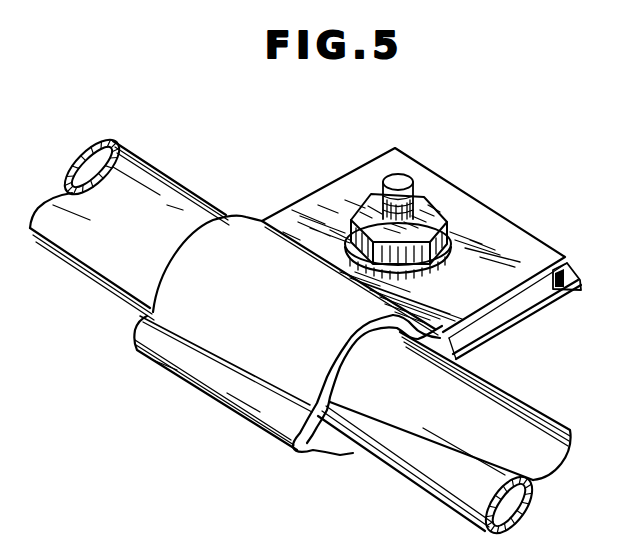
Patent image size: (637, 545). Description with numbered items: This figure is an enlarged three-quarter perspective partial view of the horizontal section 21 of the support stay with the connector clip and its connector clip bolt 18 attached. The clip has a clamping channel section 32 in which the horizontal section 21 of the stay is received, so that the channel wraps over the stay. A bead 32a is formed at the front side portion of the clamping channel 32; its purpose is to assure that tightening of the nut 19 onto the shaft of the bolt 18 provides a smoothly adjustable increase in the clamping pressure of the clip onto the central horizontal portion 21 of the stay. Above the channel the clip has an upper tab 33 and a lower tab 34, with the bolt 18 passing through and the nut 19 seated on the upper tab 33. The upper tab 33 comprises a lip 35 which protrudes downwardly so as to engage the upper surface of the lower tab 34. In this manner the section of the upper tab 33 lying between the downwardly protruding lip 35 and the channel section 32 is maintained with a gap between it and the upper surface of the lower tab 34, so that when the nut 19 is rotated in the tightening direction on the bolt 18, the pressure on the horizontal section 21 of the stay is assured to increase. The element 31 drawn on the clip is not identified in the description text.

The bolt 18 is at (400, 177).
The nut 19 is at (428, 213).
The horizontal section 21 is at (397, 442).
The strap hook 31 is at (394, 330).
The channel section 32 is at (205, 273).
The bead 32a is at (213, 377).
The upper tab 33 is at (507, 238).
The lower tab 34 is at (521, 313).
The lip 35 is at (572, 275).